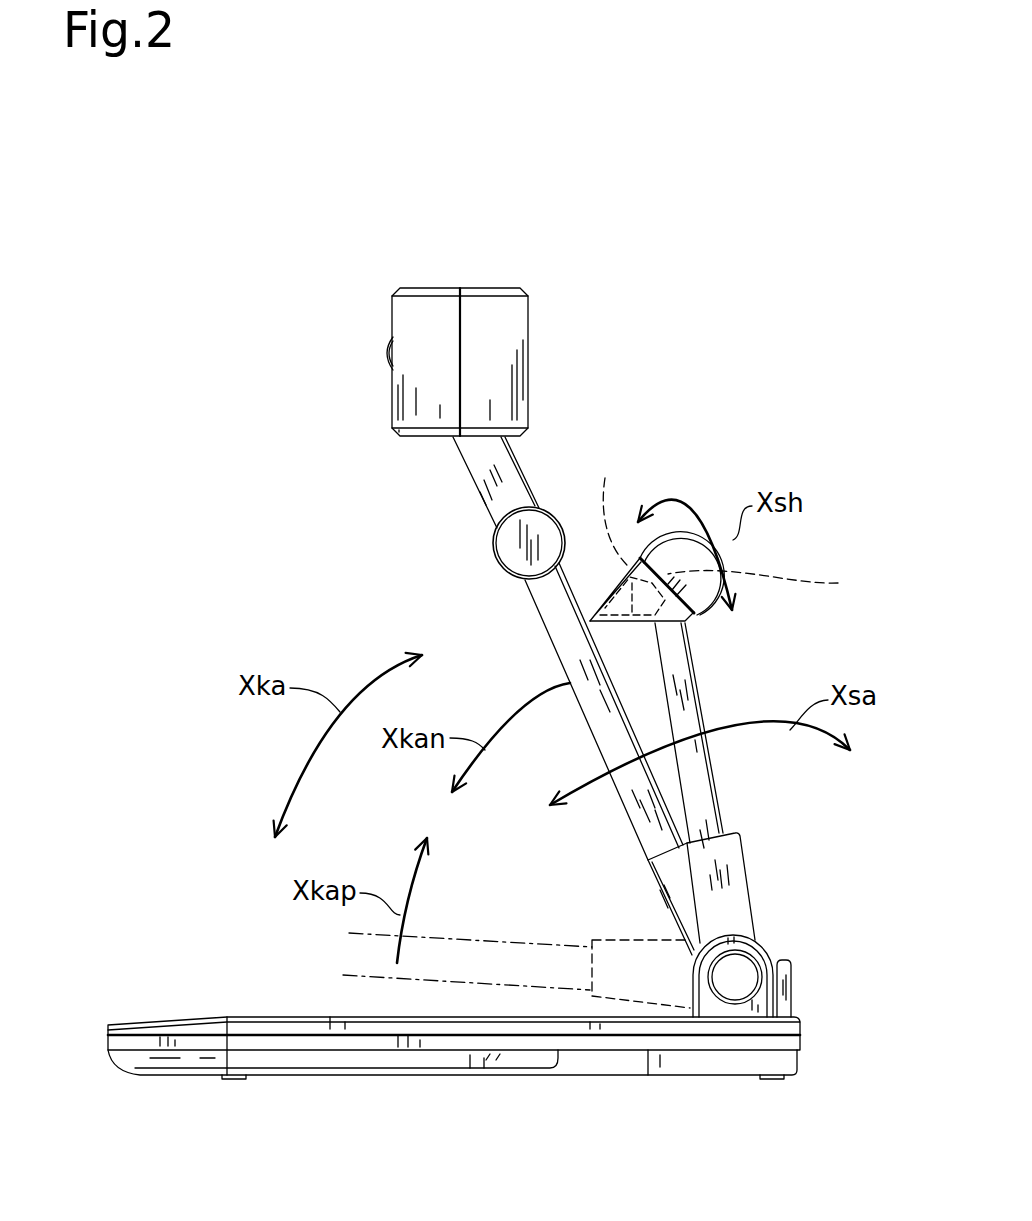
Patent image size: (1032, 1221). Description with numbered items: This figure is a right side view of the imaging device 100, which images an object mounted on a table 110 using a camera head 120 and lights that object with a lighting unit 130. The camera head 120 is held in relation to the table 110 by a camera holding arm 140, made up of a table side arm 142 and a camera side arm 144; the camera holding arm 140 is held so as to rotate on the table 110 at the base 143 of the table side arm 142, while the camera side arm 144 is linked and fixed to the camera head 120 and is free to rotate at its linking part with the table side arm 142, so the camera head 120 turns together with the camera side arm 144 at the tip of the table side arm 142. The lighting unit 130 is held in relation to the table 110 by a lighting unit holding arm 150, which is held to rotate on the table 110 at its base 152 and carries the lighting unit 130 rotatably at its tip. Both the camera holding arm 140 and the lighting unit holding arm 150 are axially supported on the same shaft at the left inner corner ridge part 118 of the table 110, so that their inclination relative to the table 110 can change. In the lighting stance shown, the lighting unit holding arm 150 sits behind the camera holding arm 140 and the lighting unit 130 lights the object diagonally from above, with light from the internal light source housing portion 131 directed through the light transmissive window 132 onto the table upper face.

The imaging device 100 is at (193, 495).
The table 110 is at (235, 1017).
The left inner corner ridge part 118 is at (773, 945).
The camera head 120 is at (406, 333).
The lighting unit 130 is at (698, 597).
The light source housing portion 131 is at (781, 581).
The light transmissive window 132 is at (615, 507).
The camera holding arm 140 is at (320, 548).
The table side arm 142 is at (522, 598).
The base 143 is at (665, 878).
The camera side arm 144 is at (487, 466).
The lighting unit holding arm 150 is at (710, 785).
The base 152 is at (732, 887).